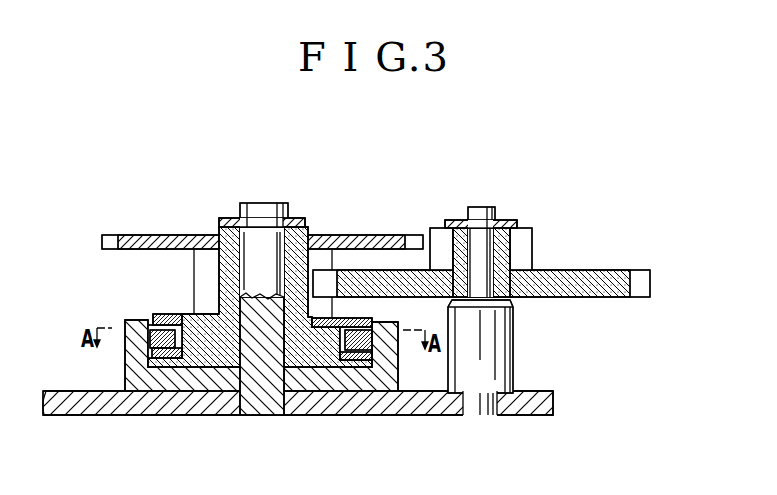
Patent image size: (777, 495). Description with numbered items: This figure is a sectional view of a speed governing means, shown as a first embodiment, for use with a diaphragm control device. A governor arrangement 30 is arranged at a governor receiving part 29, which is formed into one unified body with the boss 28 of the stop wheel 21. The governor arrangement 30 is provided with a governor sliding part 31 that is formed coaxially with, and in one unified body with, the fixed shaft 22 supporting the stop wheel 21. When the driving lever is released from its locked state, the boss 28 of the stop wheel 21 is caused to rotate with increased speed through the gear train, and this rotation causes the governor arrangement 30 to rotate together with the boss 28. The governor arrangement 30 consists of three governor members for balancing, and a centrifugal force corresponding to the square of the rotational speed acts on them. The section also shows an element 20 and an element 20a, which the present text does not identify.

The clamp block 20 is at (528, 247).
The support plate 20a is at (588, 273).
The stop wheel 21 is at (112, 238).
The fixed shaft 22 is at (268, 205).
The boss 28 is at (219, 265).
The governor receiving part 29 is at (177, 314).
The governor arrangement 30 is at (150, 330).
The governor sliding part 31 is at (132, 360).